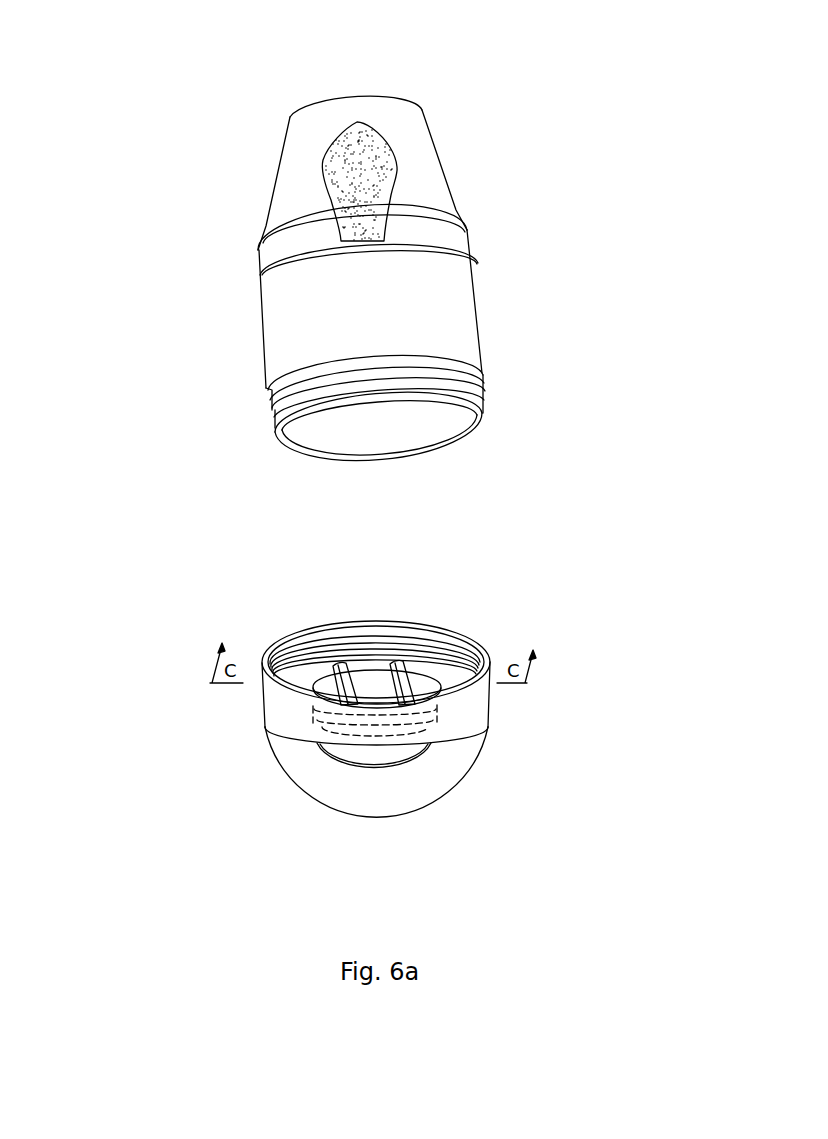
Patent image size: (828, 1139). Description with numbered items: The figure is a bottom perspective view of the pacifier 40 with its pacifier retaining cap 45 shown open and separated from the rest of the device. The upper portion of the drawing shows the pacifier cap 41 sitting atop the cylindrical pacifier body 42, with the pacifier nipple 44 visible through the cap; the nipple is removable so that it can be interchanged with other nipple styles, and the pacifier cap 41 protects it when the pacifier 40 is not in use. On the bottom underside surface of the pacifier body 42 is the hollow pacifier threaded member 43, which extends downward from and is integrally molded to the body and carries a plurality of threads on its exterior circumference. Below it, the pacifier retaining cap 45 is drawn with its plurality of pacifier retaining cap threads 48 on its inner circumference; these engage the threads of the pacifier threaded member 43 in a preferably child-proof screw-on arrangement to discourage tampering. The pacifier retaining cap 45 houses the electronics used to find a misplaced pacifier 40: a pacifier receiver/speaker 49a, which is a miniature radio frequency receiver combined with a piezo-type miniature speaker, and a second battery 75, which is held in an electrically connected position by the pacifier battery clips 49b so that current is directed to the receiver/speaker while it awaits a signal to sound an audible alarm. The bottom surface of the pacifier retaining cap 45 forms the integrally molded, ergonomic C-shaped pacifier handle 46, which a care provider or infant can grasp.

The pacifier 40 is at (113, 101).
The pacifier cap 41 is at (280, 185).
The pacifier body 42 is at (283, 303).
The pacifier threaded member 43 is at (438, 438).
The pacifier nipple 44 is at (373, 160).
The pacifier retaining cap 45 is at (275, 707).
The pacifier handle 46 is at (315, 775).
The pacifier retaining cap threads 48 is at (325, 665).
The pacifier receiver/speaker 49a is at (427, 725).
The pacifier battery clips 49b is at (398, 665).
The second battery 75 is at (420, 687).